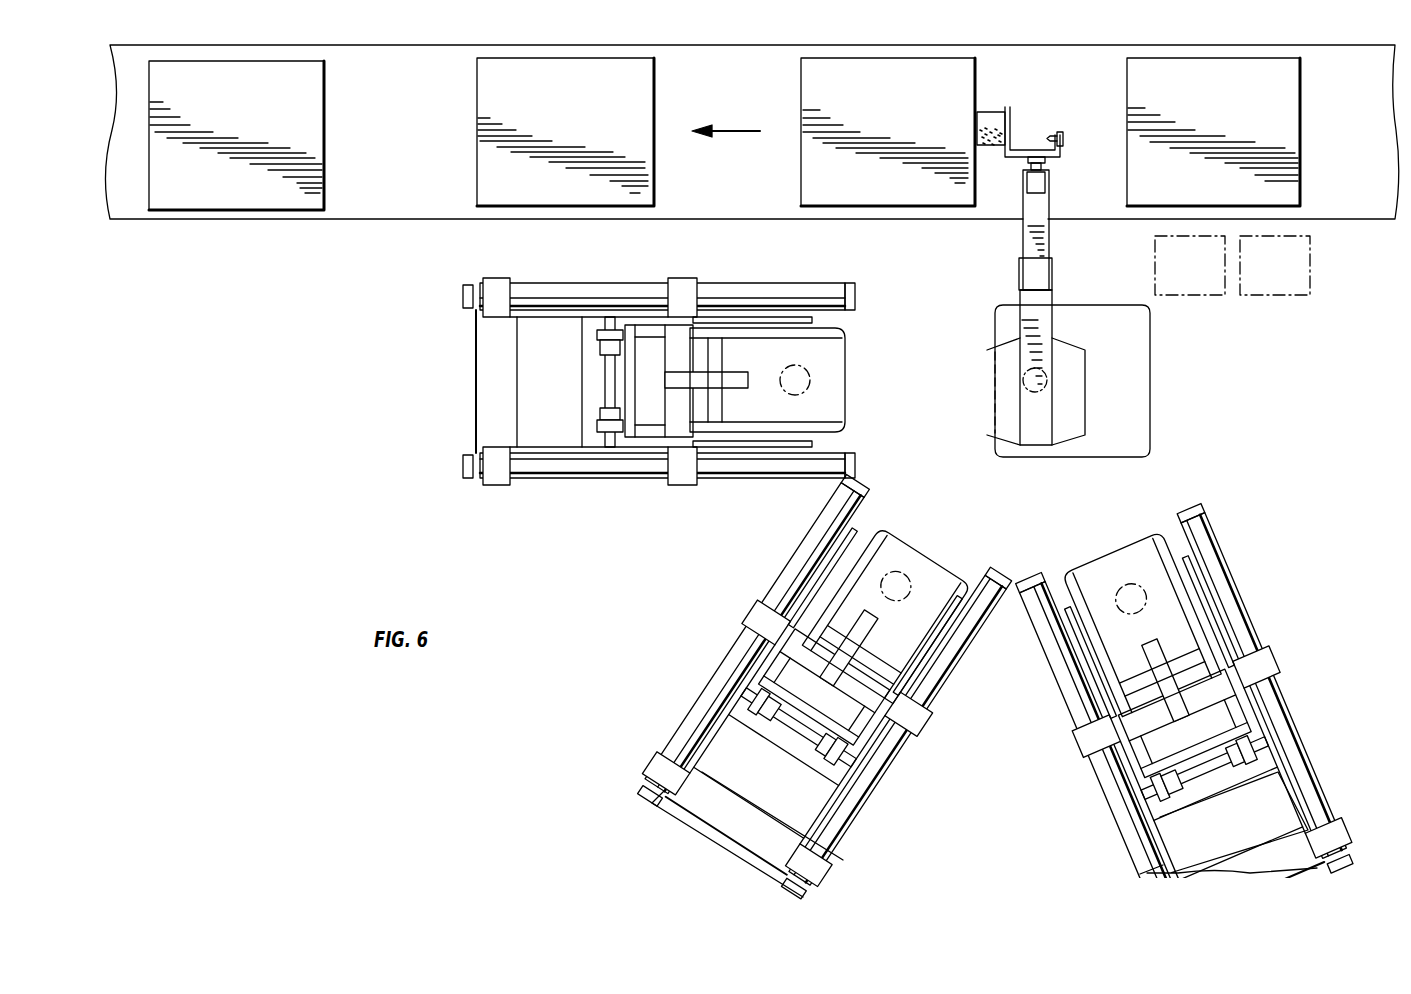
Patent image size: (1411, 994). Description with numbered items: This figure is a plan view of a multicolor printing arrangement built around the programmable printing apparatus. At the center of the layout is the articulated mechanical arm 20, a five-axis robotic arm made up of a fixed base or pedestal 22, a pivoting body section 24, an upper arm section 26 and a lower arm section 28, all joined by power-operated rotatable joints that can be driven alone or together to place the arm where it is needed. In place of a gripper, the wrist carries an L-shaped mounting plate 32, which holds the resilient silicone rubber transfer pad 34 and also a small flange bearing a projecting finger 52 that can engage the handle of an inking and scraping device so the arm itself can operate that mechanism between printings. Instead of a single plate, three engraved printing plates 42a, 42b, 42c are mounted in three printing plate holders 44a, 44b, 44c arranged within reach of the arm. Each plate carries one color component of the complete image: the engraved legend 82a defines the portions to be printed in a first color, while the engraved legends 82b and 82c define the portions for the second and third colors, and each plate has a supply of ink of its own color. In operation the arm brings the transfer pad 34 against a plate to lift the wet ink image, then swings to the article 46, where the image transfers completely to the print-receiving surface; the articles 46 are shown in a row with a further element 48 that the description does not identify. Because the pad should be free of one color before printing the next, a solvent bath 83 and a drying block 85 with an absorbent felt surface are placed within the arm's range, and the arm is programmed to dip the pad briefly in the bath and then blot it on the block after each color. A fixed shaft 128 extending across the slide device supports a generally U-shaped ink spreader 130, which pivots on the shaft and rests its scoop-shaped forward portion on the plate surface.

The articulated mechanical arm 20 is at (1155, 377).
The fixed base or pedestal 22 is at (1138, 434).
The pivoting body section 24 is at (1072, 410).
The upper arm section 26 is at (1046, 317).
The lower arm section 28 is at (1027, 228).
The L-shaped mounting plate 32 is at (1014, 124).
The resilient transfer pad 34 is at (992, 114).
The engraved printing plate 42a is at (800, 380).
The engraved printing plate 42b is at (898, 599).
The engraved printing plate 42c is at (1137, 610).
The printing plate holder 44a is at (686, 405).
The printing plate holder 44b is at (822, 687).
The printing plate holder 44c is at (1185, 733).
The article 46 is at (239, 126).
The conveyor 48 is at (407, 143).
The projecting finger 52 is at (1064, 138).
The engraved legend 82a is at (812, 376).
The engraved legend 82b is at (900, 562).
The engraved legend 82c is at (1112, 596).
The solvent bath 83 is at (1195, 290).
The drying block 85 is at (1277, 290).
The fixed shaft 128 is at (607, 388).
The U-shaped ink spreader 130 is at (612, 352).